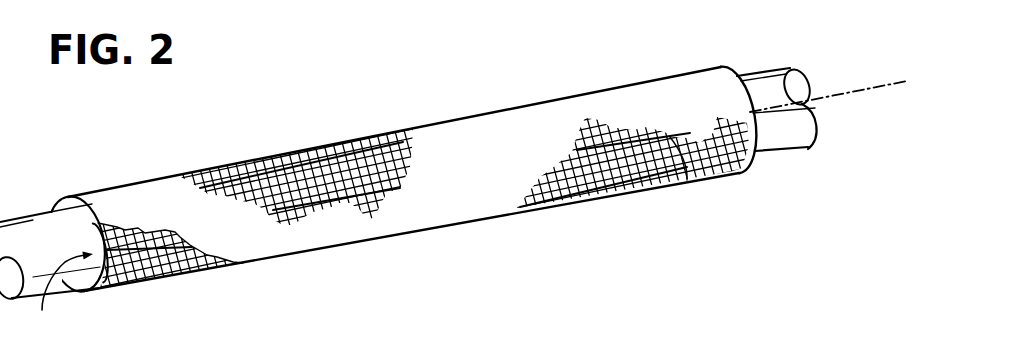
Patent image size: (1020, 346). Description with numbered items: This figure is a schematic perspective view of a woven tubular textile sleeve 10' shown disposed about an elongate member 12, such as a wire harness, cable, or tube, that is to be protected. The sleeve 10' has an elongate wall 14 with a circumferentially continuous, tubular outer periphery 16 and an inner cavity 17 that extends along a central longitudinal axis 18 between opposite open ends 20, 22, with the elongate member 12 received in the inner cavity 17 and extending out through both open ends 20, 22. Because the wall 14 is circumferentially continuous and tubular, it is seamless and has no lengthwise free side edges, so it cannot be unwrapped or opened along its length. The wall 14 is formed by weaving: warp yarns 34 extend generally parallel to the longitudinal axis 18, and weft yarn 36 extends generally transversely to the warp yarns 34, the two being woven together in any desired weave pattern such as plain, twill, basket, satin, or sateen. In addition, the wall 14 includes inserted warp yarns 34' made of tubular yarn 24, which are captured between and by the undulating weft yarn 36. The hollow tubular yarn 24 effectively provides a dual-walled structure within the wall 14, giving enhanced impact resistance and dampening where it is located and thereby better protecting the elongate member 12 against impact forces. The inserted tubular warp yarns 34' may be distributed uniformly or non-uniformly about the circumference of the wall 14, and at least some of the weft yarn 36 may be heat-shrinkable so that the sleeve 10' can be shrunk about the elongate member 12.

The woven sleeve 10' is at (453, 173).
The elongate member 12 is at (38, 212).
The elongate wall 14 is at (459, 160).
The tubular outer periphery 16 is at (521, 140).
The inner cavity 17 is at (63, 294).
The central longitudinal axis 18 is at (865, 88).
The open end 20 is at (85, 212).
The open end 22 is at (748, 102).
The tubular yarn 24 is at (163, 235).
The warp yarns 34 is at (336, 241).
The inserted warp yarns 34' is at (418, 173).
The weft yarn 36 is at (240, 170).